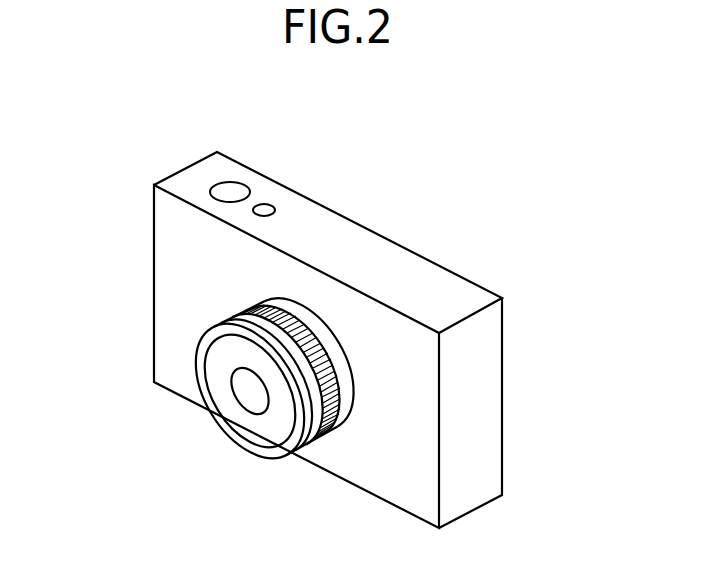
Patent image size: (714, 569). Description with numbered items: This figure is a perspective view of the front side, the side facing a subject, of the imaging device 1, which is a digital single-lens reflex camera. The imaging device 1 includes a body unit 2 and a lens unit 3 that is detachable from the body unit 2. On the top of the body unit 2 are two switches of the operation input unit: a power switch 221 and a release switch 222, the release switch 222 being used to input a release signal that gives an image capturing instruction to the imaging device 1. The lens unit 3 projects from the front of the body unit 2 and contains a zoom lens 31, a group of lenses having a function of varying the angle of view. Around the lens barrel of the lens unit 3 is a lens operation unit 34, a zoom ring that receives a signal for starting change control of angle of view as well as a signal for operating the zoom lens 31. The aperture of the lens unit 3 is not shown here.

The imaging device 1 is at (420, 166).
The body unit 2 is at (441, 290).
The lens unit 3 is at (200, 351).
The zoom lens 31 is at (247, 393).
The lens operation unit 34 is at (337, 420).
The power switch 221 is at (266, 207).
The release switch 222 is at (227, 191).